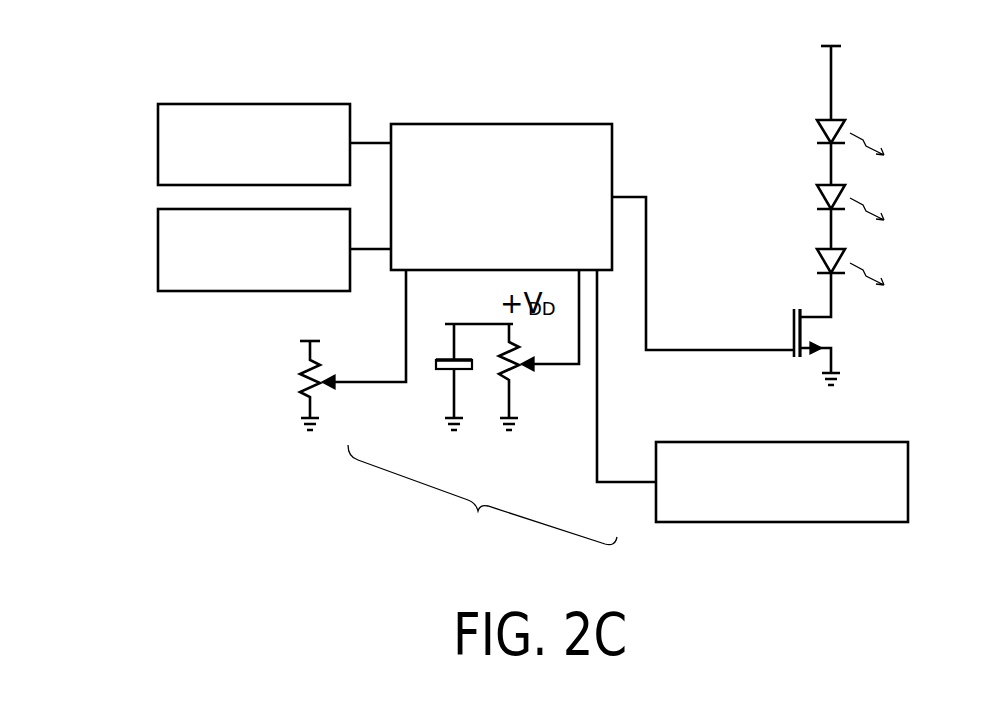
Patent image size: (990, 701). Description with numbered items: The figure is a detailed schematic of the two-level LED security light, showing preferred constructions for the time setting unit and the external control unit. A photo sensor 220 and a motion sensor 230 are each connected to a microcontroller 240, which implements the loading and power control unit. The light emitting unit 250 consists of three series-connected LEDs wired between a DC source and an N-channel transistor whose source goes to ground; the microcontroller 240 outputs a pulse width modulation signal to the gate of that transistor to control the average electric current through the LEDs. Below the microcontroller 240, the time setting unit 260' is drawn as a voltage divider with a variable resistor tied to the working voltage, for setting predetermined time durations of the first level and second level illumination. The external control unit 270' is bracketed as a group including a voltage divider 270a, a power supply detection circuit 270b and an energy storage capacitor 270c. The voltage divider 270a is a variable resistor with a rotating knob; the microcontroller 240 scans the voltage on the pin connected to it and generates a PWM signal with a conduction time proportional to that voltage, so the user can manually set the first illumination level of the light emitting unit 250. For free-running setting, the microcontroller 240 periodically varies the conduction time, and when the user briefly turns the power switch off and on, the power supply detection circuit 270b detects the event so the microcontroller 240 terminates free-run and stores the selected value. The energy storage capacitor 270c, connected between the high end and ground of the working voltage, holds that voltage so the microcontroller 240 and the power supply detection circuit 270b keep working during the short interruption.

The photo sensor 220 is at (158, 144).
The motion sensor 230 is at (158, 249).
The microcontroller 240 is at (612, 139).
The light emitting unit 250 is at (902, 186).
The time setting unit 260' is at (279, 369).
The external control unit 270' is at (482, 496).
The voltage divider 270a is at (525, 373).
The power supply detection circuit 270b is at (656, 499).
The energy storage capacitor 270c is at (450, 380).